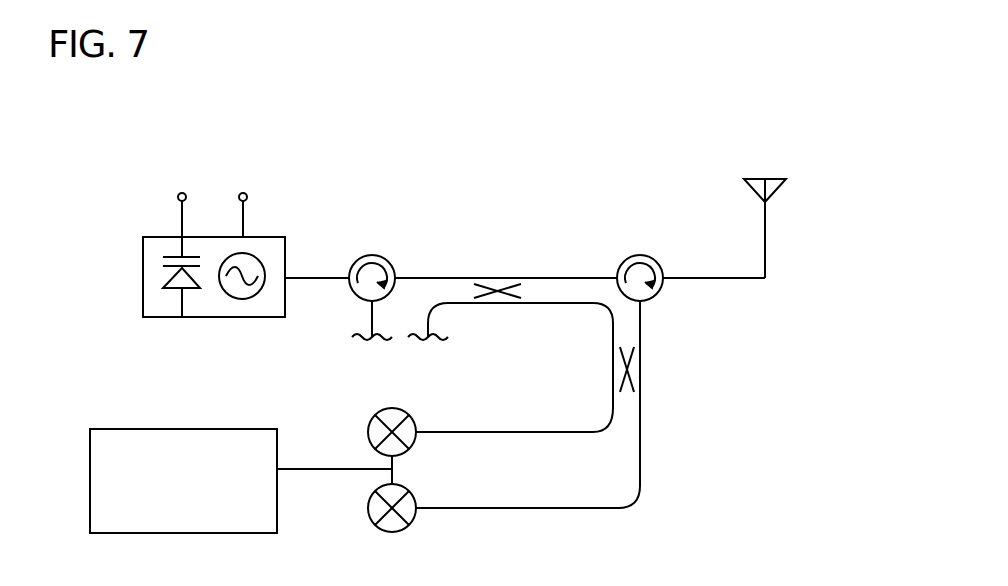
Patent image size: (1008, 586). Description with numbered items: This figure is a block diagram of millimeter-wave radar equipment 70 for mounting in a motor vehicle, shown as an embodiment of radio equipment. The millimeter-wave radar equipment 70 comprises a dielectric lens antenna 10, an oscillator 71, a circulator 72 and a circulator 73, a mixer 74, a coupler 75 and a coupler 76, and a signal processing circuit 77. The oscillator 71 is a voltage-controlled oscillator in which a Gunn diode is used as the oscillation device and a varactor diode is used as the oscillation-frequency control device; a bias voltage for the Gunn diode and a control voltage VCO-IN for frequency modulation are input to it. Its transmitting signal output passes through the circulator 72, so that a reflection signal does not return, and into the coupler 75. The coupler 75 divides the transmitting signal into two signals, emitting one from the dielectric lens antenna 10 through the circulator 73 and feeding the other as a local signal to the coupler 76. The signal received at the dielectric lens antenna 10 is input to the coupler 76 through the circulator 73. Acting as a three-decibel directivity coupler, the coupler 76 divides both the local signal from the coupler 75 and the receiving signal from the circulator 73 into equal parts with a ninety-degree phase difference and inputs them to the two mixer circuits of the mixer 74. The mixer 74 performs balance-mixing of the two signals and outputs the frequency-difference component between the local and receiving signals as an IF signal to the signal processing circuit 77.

The millimeter-wave radar equipment 70 is at (493, 145).
The oscillator 71 is at (270, 235).
The circulator 72 is at (372, 252).
The circulator 73 is at (641, 252).
The mixer 74 is at (363, 453).
The coupler 75 is at (498, 272).
The coupler 76 is at (645, 368).
The signal processing circuit 77 is at (160, 423).
The dielectric lens antenna 10 is at (766, 177).